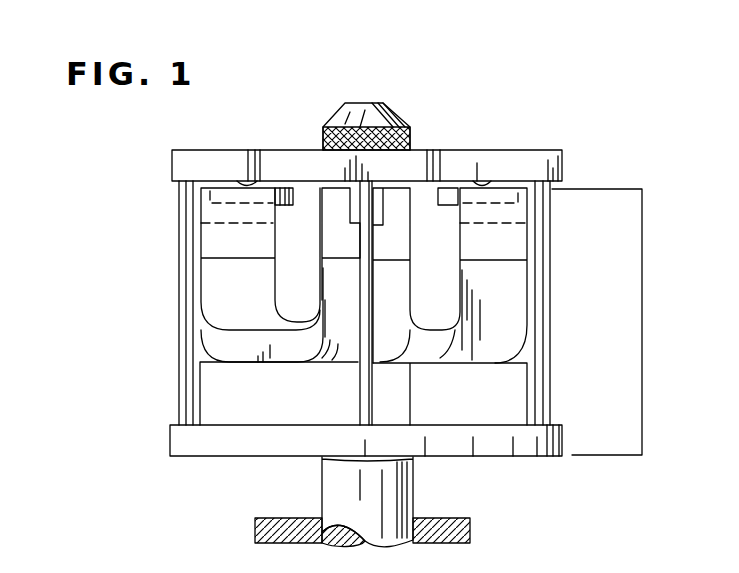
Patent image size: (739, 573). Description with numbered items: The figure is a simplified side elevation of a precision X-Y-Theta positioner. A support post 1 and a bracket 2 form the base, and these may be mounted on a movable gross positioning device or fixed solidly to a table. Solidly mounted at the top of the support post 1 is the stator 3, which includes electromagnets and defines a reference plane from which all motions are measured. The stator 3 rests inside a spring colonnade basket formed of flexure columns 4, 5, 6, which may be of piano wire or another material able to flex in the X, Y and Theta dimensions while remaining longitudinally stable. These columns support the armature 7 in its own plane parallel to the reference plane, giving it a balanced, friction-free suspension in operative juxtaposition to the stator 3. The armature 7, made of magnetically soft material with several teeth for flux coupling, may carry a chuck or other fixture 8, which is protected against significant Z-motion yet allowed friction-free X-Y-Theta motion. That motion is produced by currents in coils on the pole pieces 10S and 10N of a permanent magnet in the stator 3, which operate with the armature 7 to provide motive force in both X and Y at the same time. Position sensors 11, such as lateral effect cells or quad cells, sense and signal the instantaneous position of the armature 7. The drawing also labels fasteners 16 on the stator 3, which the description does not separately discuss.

The support post 1 is at (413, 492).
The bracket 2 is at (472, 523).
The stator 3 is at (642, 323).
The flexure column 4 is at (550, 238).
The flexure column 5 is at (358, 408).
The flexure column 6 is at (180, 240).
The armature 7 is at (553, 152).
The chuck or other fixture 8 is at (394, 127).
The pole piece 10N is at (207, 205).
The pole piece 10S is at (333, 236).
The position sensor 11 is at (285, 188).
The screw 16 is at (257, 181).